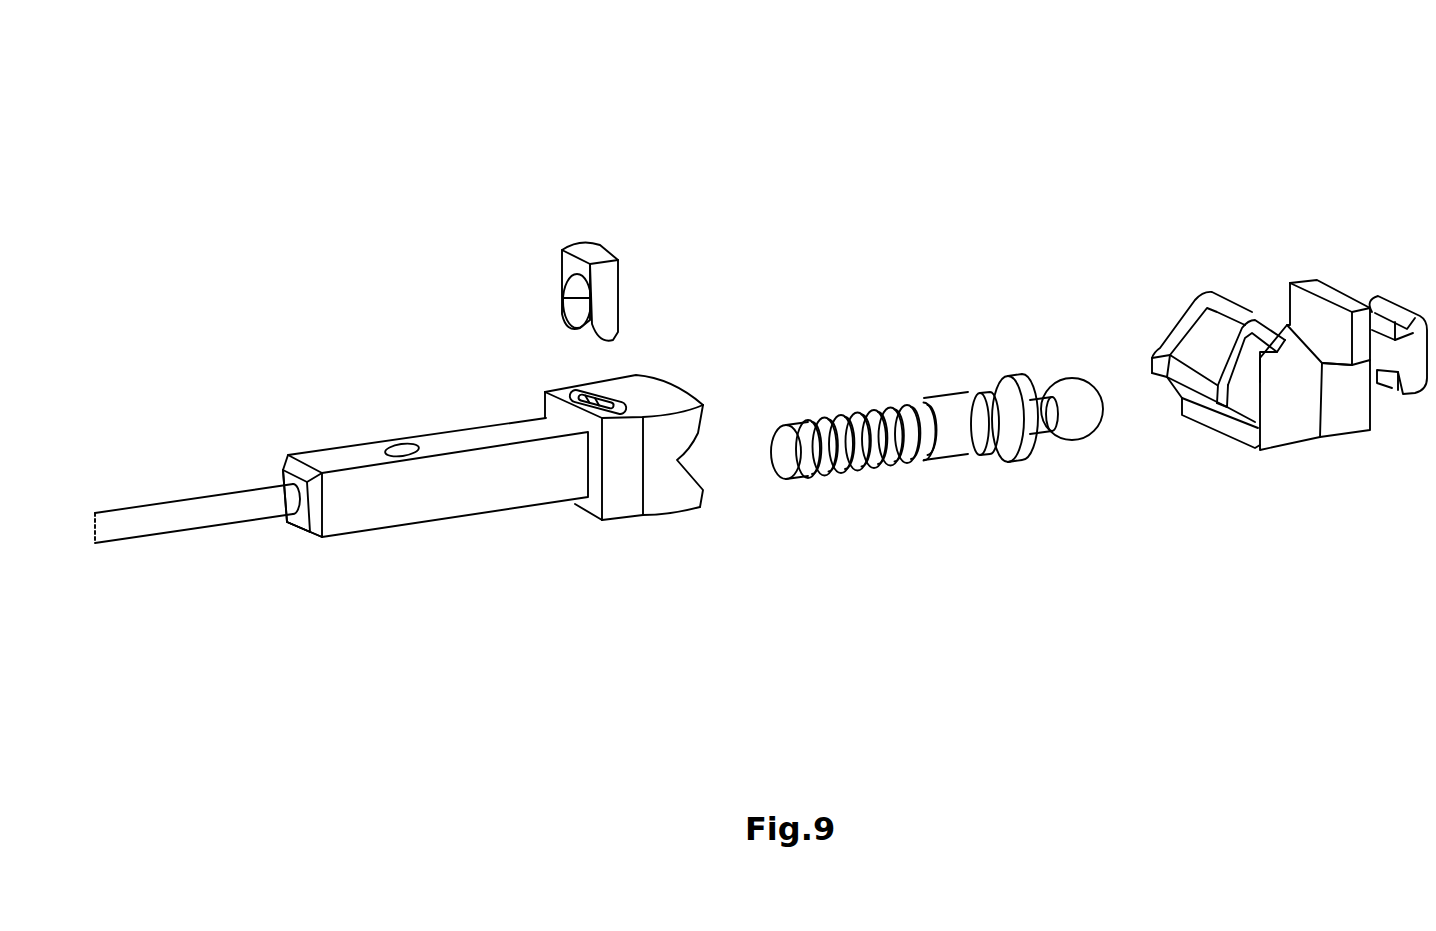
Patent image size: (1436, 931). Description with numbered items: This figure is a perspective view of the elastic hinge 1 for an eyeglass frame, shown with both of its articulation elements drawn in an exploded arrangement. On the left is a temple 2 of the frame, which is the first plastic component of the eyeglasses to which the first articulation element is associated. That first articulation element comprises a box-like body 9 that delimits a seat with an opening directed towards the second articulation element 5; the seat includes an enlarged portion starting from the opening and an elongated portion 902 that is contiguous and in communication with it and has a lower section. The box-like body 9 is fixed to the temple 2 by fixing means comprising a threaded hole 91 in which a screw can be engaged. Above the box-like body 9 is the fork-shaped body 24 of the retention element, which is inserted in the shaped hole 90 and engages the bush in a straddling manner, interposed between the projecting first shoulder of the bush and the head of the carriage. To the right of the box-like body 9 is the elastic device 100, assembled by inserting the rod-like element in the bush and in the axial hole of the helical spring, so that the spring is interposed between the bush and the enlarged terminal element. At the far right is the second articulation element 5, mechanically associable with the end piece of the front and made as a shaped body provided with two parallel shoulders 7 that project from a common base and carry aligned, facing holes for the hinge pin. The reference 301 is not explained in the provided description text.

The elastic hinge 1 is at (790, 103).
The temple 2 is at (191, 492).
The box-like body 9 is at (475, 533).
The elongated portion 902 is at (337, 543).
The threaded hole 91 is at (393, 447).
The shaped hole 90 is at (582, 394).
The fork-shaped body 24 is at (558, 245).
The elastic device 100 is at (948, 525).
The saddle arm 301 is at (1160, 307).
The shoulders 7 is at (1165, 378).
The second articulation element 5 is at (1352, 277).